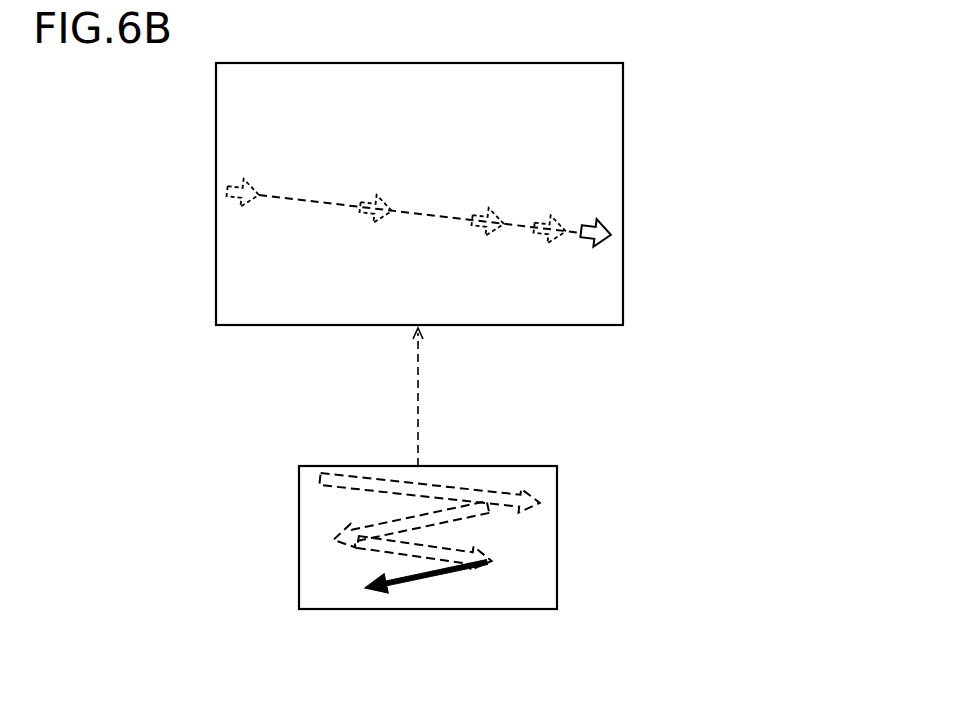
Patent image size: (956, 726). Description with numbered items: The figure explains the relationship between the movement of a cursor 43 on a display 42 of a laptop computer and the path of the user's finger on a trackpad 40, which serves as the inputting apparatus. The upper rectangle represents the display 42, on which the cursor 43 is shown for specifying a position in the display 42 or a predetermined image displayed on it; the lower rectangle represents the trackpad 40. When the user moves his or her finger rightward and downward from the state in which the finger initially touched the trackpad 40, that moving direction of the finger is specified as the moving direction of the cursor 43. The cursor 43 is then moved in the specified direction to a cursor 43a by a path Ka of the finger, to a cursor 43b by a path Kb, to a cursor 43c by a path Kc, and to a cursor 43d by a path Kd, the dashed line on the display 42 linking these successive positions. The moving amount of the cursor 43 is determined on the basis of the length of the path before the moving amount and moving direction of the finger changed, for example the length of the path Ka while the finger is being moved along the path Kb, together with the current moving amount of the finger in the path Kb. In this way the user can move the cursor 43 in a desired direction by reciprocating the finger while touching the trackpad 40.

The trackpad 40 is at (542, 598).
The display 42 is at (594, 142).
The cursor 43 is at (237, 183).
The cursor 43a is at (367, 207).
The cursor 43b is at (478, 223).
The cursor 43c is at (557, 222).
The cursor 43d is at (598, 243).
The path Ka is at (442, 488).
The path Kb is at (488, 513).
The path Kc is at (360, 548).
The path Kd is at (438, 575).